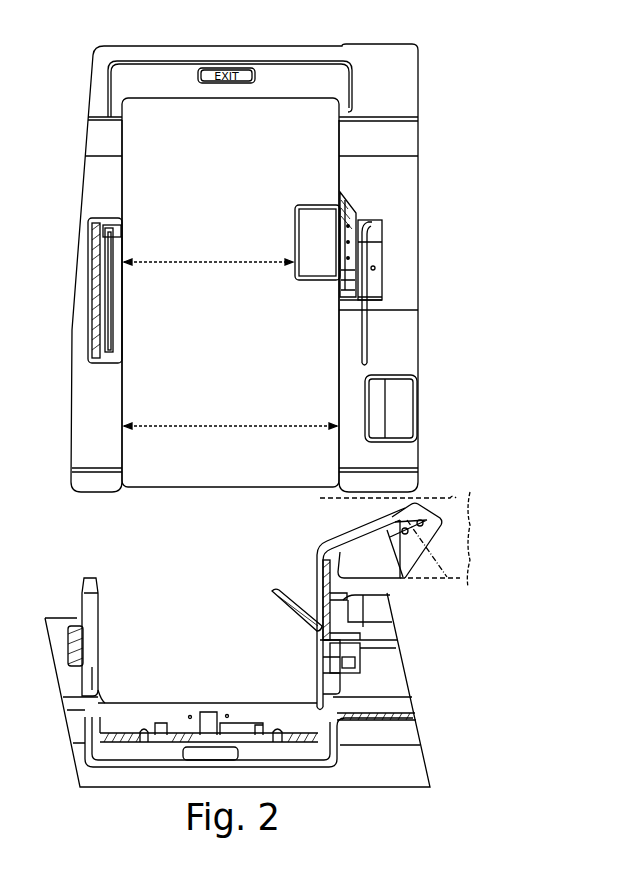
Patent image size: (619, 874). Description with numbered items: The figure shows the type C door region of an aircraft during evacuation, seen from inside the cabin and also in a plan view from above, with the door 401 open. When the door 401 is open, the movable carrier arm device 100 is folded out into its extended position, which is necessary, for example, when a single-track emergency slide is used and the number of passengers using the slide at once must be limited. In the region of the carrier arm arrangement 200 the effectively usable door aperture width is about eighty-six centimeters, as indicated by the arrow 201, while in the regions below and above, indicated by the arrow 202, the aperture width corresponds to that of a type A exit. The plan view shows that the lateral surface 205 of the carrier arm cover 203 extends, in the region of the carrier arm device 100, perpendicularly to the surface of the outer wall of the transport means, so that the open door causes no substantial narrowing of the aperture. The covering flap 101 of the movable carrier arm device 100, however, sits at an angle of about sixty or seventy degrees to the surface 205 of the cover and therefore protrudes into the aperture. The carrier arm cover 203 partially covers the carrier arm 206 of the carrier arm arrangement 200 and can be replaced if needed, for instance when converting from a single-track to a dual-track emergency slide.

The movable carrier arm device 100 is at (316, 217).
The covering flap 101 is at (297, 620).
The carrier arm arrangement 200 is at (423, 562).
The arrow 201 is at (197, 268).
The arrow 202 is at (177, 430).
The carrier arm cover 203 is at (360, 542).
The lateral surface 205 is at (308, 568).
The carrier arm 206 is at (430, 537).
The door 401 is at (452, 496).